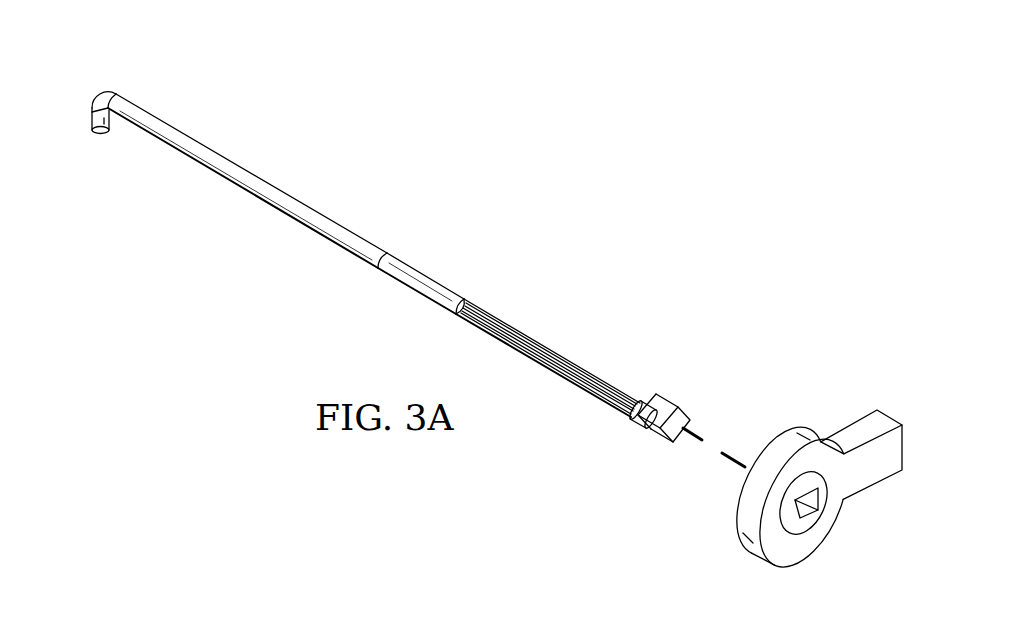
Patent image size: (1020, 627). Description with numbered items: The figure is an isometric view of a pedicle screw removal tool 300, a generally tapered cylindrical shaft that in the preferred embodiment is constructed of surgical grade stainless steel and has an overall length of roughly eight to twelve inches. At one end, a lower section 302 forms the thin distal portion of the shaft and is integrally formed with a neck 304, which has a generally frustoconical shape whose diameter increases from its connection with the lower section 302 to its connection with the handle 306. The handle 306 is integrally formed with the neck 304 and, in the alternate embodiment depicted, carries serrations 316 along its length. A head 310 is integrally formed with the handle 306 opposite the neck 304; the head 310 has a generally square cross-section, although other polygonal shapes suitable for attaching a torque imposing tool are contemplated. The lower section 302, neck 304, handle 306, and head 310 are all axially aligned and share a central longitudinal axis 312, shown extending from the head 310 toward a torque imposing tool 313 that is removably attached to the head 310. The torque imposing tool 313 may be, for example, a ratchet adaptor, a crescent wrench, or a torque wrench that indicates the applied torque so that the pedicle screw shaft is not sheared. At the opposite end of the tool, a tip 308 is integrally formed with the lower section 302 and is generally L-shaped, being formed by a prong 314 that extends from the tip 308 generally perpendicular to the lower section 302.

The pedicle screw removal tool 300 is at (613, 168).
The lower section 302 is at (253, 173).
The neck 304 is at (433, 272).
The handle 306 is at (540, 332).
The tip 308 is at (84, 86).
The head 310 is at (677, 410).
The central longitudinal axis 312 is at (713, 447).
The torque imposing tool 313 is at (737, 517).
The prong 314 is at (93, 117).
The serrations 316 is at (607, 380).